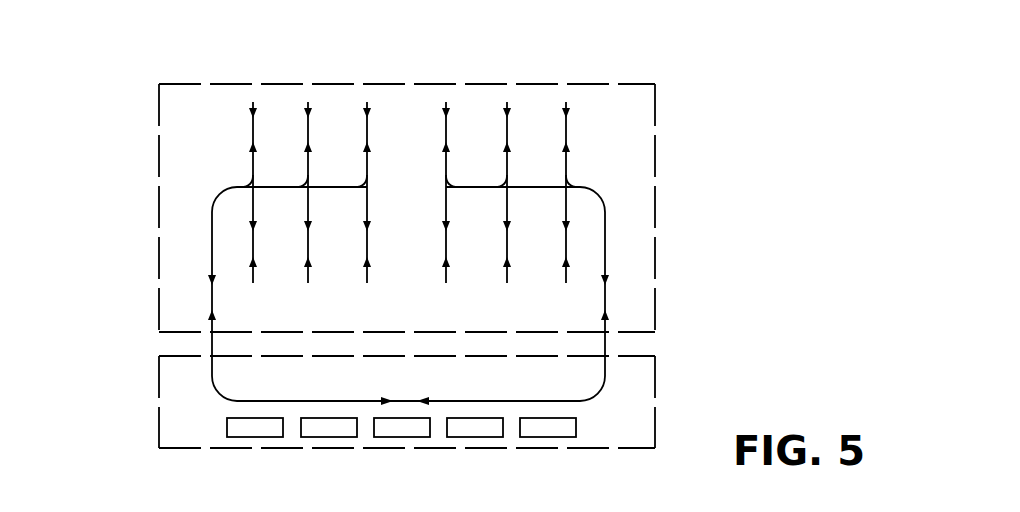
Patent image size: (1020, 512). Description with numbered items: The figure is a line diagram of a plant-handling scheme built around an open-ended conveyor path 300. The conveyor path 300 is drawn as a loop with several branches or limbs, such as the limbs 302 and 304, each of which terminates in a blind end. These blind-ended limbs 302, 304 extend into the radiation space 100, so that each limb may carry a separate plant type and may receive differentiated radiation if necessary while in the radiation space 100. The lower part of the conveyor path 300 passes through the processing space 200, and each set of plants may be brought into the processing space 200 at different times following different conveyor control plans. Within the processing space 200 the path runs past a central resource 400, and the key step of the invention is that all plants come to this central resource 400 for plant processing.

The radiation space 100 is at (655, 222).
The processing space 200 is at (655, 382).
The open-ended conveyor path 300 is at (212, 242).
The branch of the conveyor path 302 is at (567, 127).
The branch of the conveyor path 304 is at (507, 128).
The central resource 400 is at (243, 428).